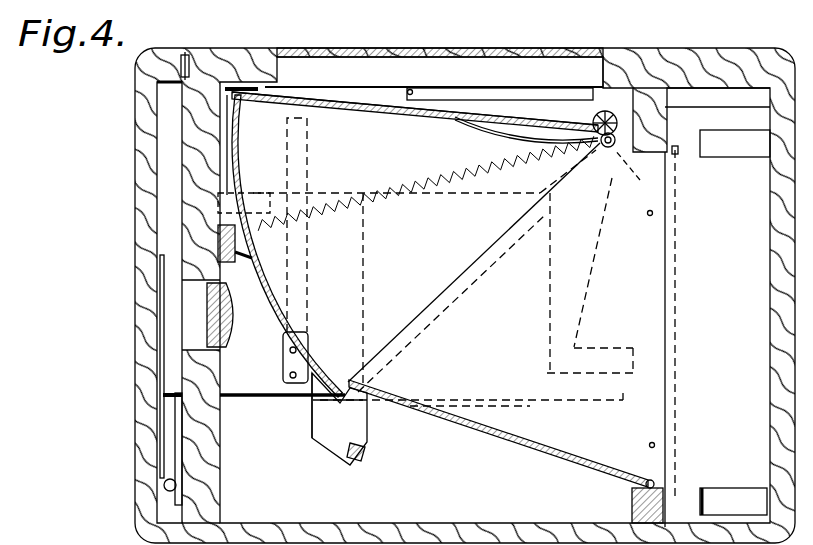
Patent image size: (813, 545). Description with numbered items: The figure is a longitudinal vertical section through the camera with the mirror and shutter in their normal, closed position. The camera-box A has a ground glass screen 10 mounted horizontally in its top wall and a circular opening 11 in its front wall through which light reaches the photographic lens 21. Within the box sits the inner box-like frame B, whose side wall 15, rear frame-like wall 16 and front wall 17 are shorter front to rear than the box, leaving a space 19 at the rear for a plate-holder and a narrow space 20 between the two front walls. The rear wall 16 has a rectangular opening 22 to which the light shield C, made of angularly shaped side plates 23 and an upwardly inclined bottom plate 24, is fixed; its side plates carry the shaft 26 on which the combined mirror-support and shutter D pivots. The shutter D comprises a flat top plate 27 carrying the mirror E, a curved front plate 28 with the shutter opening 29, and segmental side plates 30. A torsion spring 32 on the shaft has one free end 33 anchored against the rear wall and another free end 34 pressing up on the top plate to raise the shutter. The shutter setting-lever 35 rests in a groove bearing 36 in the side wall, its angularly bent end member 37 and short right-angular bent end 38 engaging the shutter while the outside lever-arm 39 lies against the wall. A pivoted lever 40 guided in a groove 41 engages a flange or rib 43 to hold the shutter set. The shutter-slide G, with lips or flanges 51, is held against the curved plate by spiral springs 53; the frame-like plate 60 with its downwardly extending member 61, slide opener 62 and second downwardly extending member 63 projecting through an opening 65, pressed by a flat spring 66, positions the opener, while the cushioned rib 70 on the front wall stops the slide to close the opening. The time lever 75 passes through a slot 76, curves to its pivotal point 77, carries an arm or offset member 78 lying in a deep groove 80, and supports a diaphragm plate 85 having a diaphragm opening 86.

The ground glass screen 10 is at (480, 98).
The circular opening 11 is at (145, 288).
The side wall 15 is at (468, 477).
The rear frame-like wall 16 is at (667, 150).
The front wall 17 is at (205, 468).
The space 19 is at (707, 117).
The narrow space 20 is at (163, 220).
The photographic lens 21 is at (180, 340).
The rectangular opening 22 is at (596, 310).
The angularly shaped side plates 23 is at (501, 347).
The upwardly inclined bottom plate 24 is at (595, 448).
The shaft 26 is at (633, 88).
The flat top plate 27 is at (410, 106).
The curved front plate 28 is at (277, 293).
The shutter opening 29 is at (273, 163).
The segmental side plates 30 is at (474, 262).
The torsion spring 32 is at (584, 262).
The free end of spring 33 is at (637, 183).
The free end of spring 34 is at (478, 118).
The shutter setting-lever 35 is at (597, 108).
The groove bearing 36 is at (640, 92).
The angularly bent end member 37 is at (500, 77).
The short right-angular bent end 38 is at (434, 74).
The outside lever-arm 39 is at (498, 212).
The pivoted lever 40 is at (308, 400).
The groove 41 is at (263, 404).
The flange or rib 43 is at (445, 323).
The lips or flanges 51 is at (236, 315).
The spiral springs 53 is at (426, 183).
The frame-like plate 60 is at (470, 50).
The downwardly extending member 61 is at (347, 418).
The slide opener 62 is at (355, 439).
The second downwardly extending member 63 is at (562, 300).
The opening 65 is at (633, 358).
The flat spring 66 is at (284, 367).
The cushioned rib 70 is at (218, 242).
The time lever 75 is at (173, 430).
The slot 76 is at (180, 70).
The pivotal point 77 is at (173, 497).
The arm or offset member 78 is at (163, 200).
The deep groove 80 is at (315, 222).
The diaphragm plate 85 is at (157, 295).
The diaphragm opening 86 is at (207, 337).
The camera-box A is at (135, 122).
The inner box-like frame B is at (668, 227).
The light shield C is at (600, 483).
The combined mirror-support and shutter D is at (389, 234).
The mirror E is at (368, 97).
The shutter-slide G is at (220, 155).